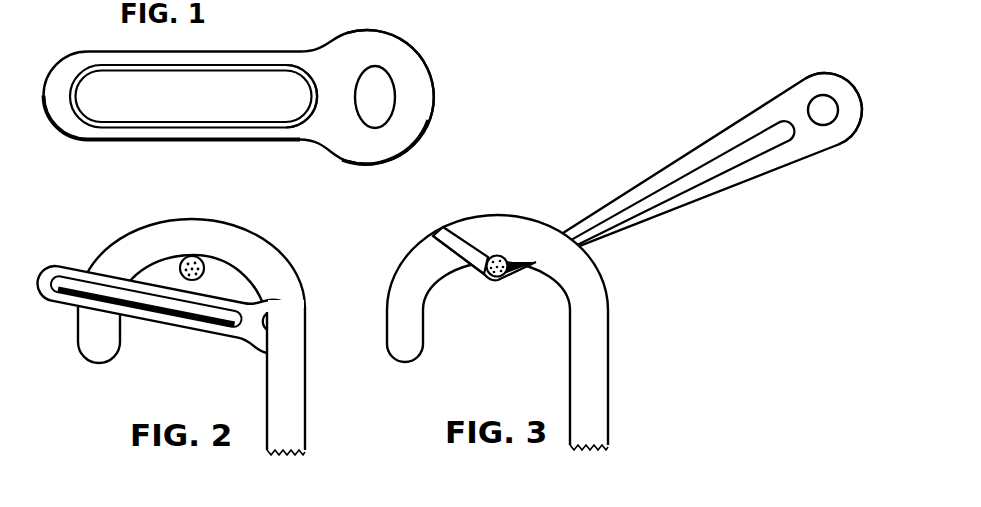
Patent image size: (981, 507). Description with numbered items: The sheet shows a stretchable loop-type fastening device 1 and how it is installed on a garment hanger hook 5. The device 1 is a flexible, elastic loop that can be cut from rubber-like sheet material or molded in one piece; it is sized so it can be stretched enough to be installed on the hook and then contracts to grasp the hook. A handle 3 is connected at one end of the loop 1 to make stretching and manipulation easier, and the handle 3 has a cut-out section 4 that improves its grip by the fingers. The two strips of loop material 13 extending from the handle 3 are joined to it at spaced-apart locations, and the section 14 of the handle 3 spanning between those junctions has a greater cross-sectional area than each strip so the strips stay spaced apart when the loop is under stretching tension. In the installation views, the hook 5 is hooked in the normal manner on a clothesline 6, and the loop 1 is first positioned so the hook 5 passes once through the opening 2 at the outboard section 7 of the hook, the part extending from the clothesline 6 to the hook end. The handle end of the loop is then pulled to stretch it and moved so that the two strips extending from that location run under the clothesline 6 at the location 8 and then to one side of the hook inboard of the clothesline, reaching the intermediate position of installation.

In FIG. 1, the loop-type fastening device 1 is at (97, 51).
In FIG. 2, the loop-type fastening device 1 is at (165, 313).
In FIG. 3, the loop-type fastening device 1 is at (716, 159).
In FIG. 1, the opening 2 is at (152, 103).
In FIG. 2, the opening 2 is at (153, 305).
In FIG. 1, the handle 3 is at (428, 127).
In FIG. 3, the handle 3 is at (843, 145).
In FIG. 1, the cut-out section 4 is at (378, 95).
In FIG. 2, the garment hanger hook 5 is at (308, 420).
In FIG. 3, the garment hanger hook 5 is at (609, 419).
In FIG. 2, the clothesline 6 is at (203, 268).
In FIG. 3, the clothesline 6 is at (506, 258).
In FIG. 2, the outboard section of the hook 7 is at (110, 247).
In FIG. 3, the outboard section of the hook 7 is at (497, 288).
In FIG. 3, the location under the clothesline 8 is at (495, 280).
In FIG. 1, the strips of loop material 13 is at (268, 52).
In FIG. 1, the section of the handle 14 is at (335, 99).